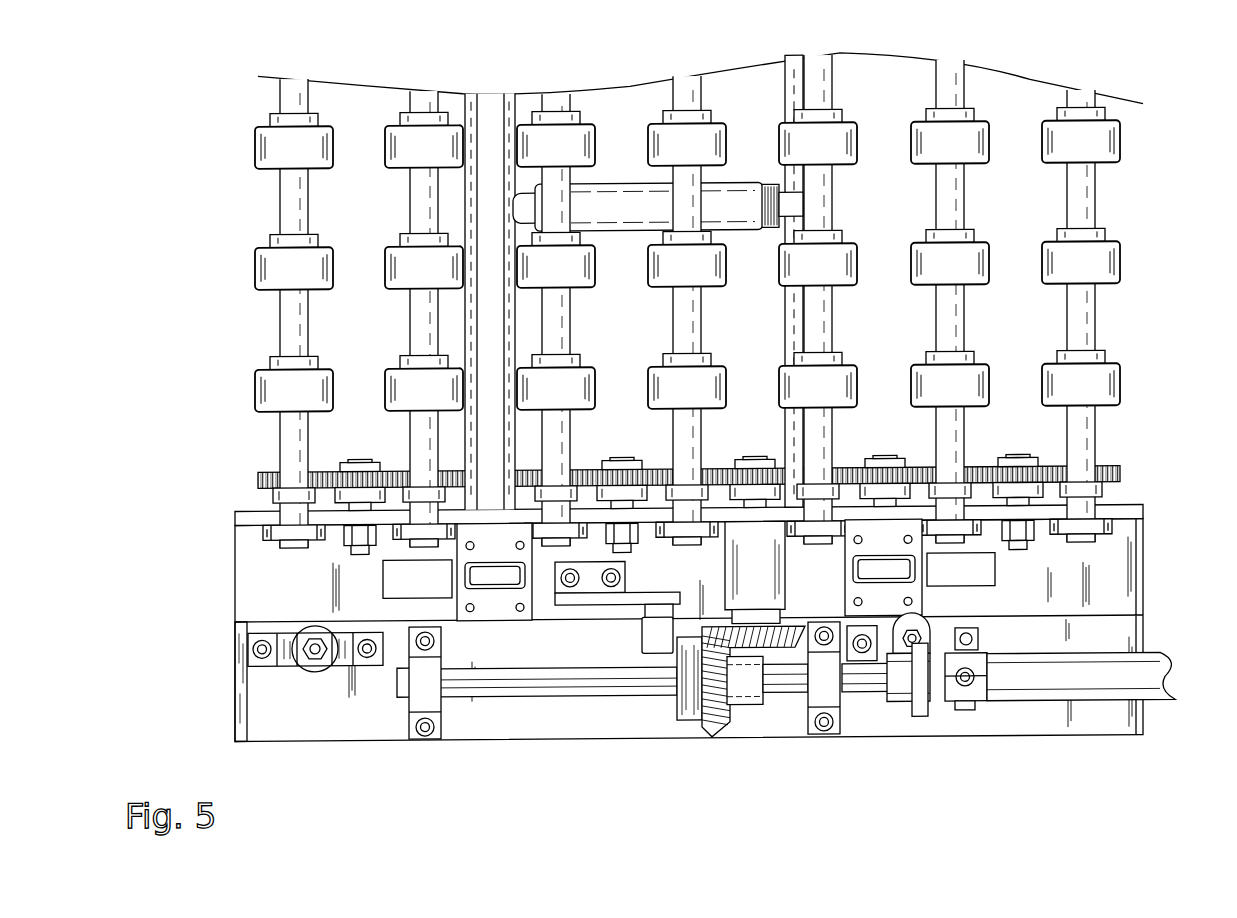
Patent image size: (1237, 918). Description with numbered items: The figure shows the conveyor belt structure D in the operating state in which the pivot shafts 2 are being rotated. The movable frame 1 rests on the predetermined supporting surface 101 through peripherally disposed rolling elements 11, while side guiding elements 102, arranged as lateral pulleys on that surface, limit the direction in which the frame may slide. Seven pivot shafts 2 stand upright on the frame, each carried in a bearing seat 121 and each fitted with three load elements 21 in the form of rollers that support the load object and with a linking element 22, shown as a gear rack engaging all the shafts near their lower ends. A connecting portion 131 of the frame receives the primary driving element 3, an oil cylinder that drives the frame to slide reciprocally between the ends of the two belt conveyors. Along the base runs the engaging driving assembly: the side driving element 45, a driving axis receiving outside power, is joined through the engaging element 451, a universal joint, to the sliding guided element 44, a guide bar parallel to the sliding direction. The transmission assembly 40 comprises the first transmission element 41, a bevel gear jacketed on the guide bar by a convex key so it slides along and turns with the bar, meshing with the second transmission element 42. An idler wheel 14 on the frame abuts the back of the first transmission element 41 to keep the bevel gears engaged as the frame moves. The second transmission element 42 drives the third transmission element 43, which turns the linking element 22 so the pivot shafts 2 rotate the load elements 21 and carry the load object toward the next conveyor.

The conveyor belt structure D is at (215, 208).
The movable frame 1 is at (255, 591).
The predetermined supporting surface 101 is at (248, 693).
The side guiding element 102 is at (315, 675).
The rolling element 11 is at (500, 592).
The bearing seat 121 is at (1120, 525).
The connecting portion 131 is at (492, 120).
The idler wheel 14 is at (652, 655).
The pivot shaft 2 is at (1090, 320).
The load element 21 is at (1112, 259).
The linking element 22 is at (1120, 466).
The primary driving element 3 is at (628, 205).
The transmission assembly 40 is at (762, 725).
The first transmission element 41 is at (722, 715).
The second transmission element 42 is at (770, 648).
The third transmission element 43 is at (760, 466).
The sliding guided element 44 is at (555, 683).
The side driving element 45 is at (1058, 697).
The engaging element 451 is at (923, 718).